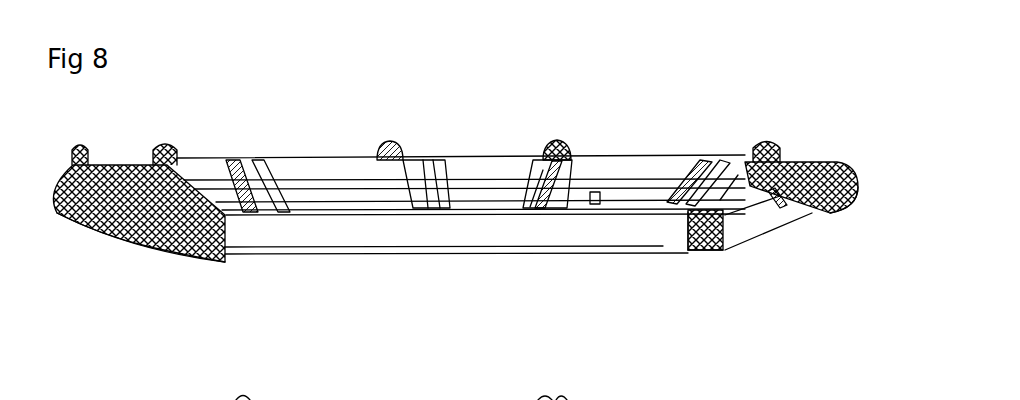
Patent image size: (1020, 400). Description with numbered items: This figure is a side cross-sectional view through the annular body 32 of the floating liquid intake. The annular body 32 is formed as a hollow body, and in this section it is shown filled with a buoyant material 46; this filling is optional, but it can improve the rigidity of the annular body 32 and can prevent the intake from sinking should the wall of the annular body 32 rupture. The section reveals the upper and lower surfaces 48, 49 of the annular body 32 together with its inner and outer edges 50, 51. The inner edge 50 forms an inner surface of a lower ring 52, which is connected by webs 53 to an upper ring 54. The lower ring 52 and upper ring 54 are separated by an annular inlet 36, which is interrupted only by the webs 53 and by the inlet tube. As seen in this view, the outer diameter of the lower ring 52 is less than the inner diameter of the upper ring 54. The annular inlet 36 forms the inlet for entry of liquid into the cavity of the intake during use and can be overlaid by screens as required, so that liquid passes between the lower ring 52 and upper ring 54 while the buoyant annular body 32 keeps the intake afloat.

The annular body 32 is at (722, 110).
The annular inlet 36 is at (750, 218).
The buoyant material 46 is at (110, 238).
The upper surface 48 is at (115, 165).
The lower surface 49 is at (160, 253).
The inner edge 50 is at (687, 230).
The outer edge 51 is at (858, 210).
The lower ring 52 is at (723, 242).
The webs 53 is at (255, 180).
The upper ring 54 is at (797, 162).